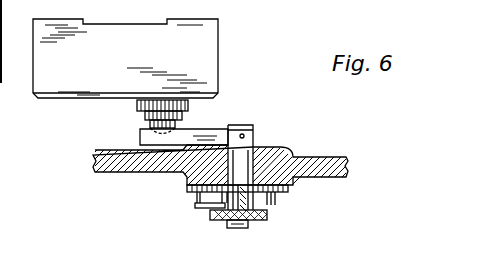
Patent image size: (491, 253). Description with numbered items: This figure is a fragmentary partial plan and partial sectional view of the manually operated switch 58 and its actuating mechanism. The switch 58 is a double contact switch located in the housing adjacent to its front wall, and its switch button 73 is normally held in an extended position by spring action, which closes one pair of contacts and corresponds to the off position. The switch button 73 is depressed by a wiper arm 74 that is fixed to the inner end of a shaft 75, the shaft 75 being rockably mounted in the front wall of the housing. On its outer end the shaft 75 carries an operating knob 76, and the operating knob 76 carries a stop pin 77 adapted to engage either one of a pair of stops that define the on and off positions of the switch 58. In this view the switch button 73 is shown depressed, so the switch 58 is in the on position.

The switch LS8 58 is at (215, 32).
The switch button 73 is at (178, 127).
The wiper arm 74 is at (163, 147).
The shaft 75 is at (263, 147).
The operating knob 76 is at (267, 217).
The stop pin 77 is at (198, 208).